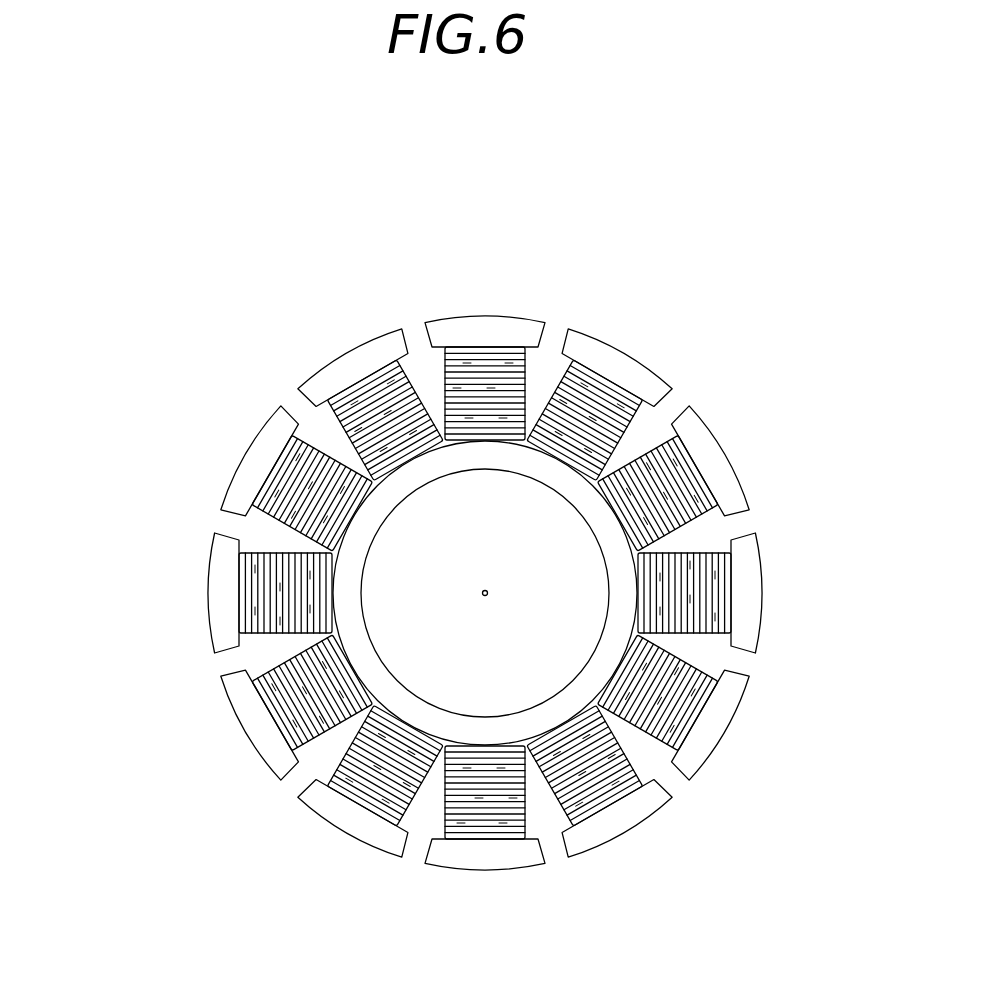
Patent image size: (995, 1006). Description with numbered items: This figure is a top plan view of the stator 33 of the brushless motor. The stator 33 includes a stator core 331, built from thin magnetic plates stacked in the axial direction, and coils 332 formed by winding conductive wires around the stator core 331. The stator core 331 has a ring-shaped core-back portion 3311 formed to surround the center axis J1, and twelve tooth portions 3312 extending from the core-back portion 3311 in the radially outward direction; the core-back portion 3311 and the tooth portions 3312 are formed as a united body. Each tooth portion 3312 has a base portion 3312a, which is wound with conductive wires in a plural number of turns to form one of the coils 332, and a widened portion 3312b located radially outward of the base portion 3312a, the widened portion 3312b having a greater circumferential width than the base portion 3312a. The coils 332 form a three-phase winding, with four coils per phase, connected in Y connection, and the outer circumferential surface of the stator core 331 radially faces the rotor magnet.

The stator 33 is at (465, 593).
The stator core 331 is at (465, 593).
The coils 332 is at (318, 771).
The core-back portion 3311 is at (357, 558).
The tooth portions 3312 is at (506, 593).
The base portion 3312a is at (634, 431).
The widened portion 3312b is at (650, 383).
The center axis J1 is at (487, 591).